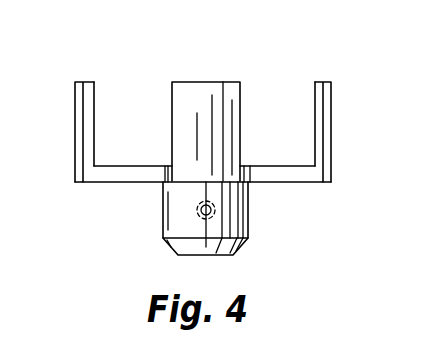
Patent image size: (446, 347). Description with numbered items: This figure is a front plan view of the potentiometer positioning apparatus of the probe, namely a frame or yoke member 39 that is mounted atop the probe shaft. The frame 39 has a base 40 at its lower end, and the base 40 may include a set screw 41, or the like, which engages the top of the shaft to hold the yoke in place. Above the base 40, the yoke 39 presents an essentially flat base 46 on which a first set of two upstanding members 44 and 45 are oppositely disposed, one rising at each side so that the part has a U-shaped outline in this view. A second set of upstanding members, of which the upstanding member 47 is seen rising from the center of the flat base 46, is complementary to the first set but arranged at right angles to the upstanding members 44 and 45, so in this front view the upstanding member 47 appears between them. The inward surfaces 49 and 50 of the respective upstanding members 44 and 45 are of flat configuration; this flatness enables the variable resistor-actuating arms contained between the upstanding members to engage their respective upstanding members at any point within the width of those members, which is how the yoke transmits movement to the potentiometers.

The frame or yoke member 39 is at (307, 188).
The base 40 is at (246, 242).
The set screw 41 is at (215, 207).
The upstanding member 44 is at (83, 82).
The upstanding member 45 is at (325, 82).
The flat base 46 is at (130, 183).
The upstanding member 47 is at (205, 82).
The inward surface 49 is at (96, 115).
The inward surface 50 is at (315, 93).